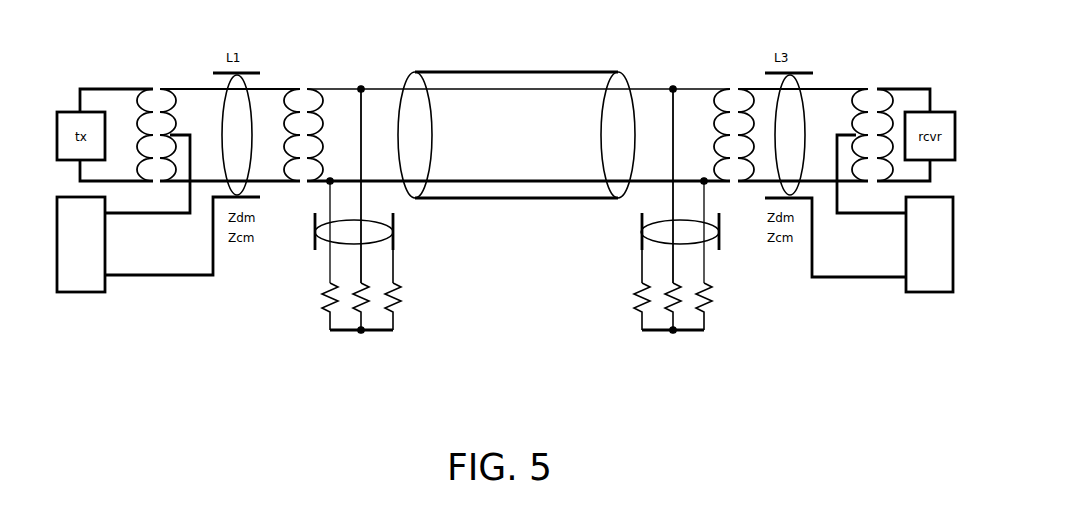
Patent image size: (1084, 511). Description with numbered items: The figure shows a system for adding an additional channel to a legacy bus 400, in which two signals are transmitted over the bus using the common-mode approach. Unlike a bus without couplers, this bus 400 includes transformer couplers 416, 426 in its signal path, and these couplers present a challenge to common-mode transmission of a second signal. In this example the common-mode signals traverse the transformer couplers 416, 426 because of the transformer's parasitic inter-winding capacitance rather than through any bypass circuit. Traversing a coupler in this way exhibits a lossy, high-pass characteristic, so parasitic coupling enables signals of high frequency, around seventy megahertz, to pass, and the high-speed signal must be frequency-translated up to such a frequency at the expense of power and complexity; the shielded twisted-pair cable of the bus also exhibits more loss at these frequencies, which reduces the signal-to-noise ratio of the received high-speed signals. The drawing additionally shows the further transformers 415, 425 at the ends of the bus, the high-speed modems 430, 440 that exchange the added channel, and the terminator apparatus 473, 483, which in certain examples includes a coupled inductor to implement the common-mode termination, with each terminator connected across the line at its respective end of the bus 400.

The first transformer T1 415 is at (157, 100).
The transformer coupler 416 is at (301, 100).
The bus 400 is at (640, 88).
The transformer coupler 426 is at (732, 100).
The fourth transformer T4 425 is at (873, 100).
The first highspeed modem 430 is at (77, 290).
The second highspeed modem 440 is at (953, 292).
The first termination resistor network R1a-R1c 473 is at (367, 248).
The second termination resistor network R2a-R2c 483 is at (661, 248).